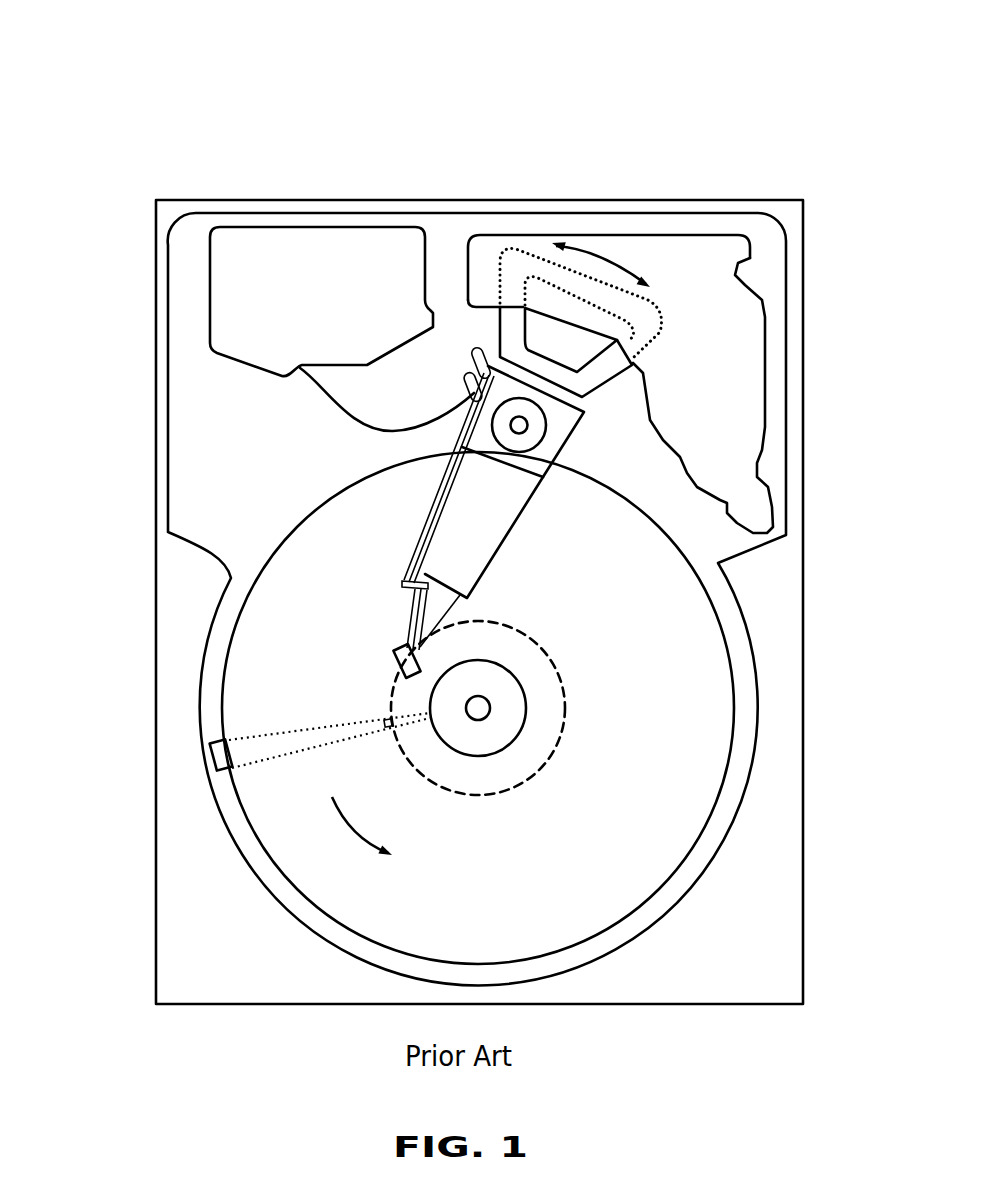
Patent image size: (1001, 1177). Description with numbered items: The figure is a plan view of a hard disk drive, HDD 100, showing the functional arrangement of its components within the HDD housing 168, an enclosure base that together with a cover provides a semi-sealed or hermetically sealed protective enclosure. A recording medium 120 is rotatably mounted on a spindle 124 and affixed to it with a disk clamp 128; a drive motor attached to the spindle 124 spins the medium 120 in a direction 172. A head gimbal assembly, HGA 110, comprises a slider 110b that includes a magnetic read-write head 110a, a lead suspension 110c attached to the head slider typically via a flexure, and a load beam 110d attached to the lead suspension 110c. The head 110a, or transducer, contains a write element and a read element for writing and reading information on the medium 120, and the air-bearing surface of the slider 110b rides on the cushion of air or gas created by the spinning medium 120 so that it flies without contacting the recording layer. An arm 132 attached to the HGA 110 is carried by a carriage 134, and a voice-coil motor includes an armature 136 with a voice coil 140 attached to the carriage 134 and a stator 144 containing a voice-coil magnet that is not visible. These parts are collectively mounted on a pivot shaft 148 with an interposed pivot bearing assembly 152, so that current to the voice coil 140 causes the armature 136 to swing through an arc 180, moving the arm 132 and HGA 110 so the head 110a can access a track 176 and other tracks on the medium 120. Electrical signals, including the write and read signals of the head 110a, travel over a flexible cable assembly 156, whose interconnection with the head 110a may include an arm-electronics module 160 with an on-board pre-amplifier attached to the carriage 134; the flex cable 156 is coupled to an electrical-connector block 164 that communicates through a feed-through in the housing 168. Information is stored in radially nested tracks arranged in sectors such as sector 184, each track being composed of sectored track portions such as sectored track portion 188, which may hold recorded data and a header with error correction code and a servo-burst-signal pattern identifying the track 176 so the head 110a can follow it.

The hard disk drive 100 is at (80, 72).
The head gimbal assembly 110 is at (82, 513).
The magnetic read-write head 110a is at (393, 673).
The slider 110b is at (413, 648).
The lead suspension 110c is at (433, 599).
The load beam 110d is at (407, 573).
The recording medium 120 is at (663, 658).
The spindle 124 is at (482, 707).
The disk clamp 128 is at (505, 723).
The arm 132 is at (472, 542).
The carriage 134 is at (537, 458).
The armature 136 is at (502, 350).
The voice coil 140 is at (515, 318).
The stator 144 is at (730, 327).
The pivot shaft 148 is at (530, 423).
The pivot bearing assembly 152 is at (530, 438).
The flexible cable assembly 156 is at (337, 402).
The arm-electronics module 160 is at (477, 387).
The electrical-connector block 164 is at (237, 300).
The HDD housing 168 is at (785, 212).
The direction 172 is at (363, 835).
The track 176 is at (555, 668).
The arc 180 is at (600, 255).
The sector 184 is at (205, 757).
The sectored track portion 188 is at (383, 727).